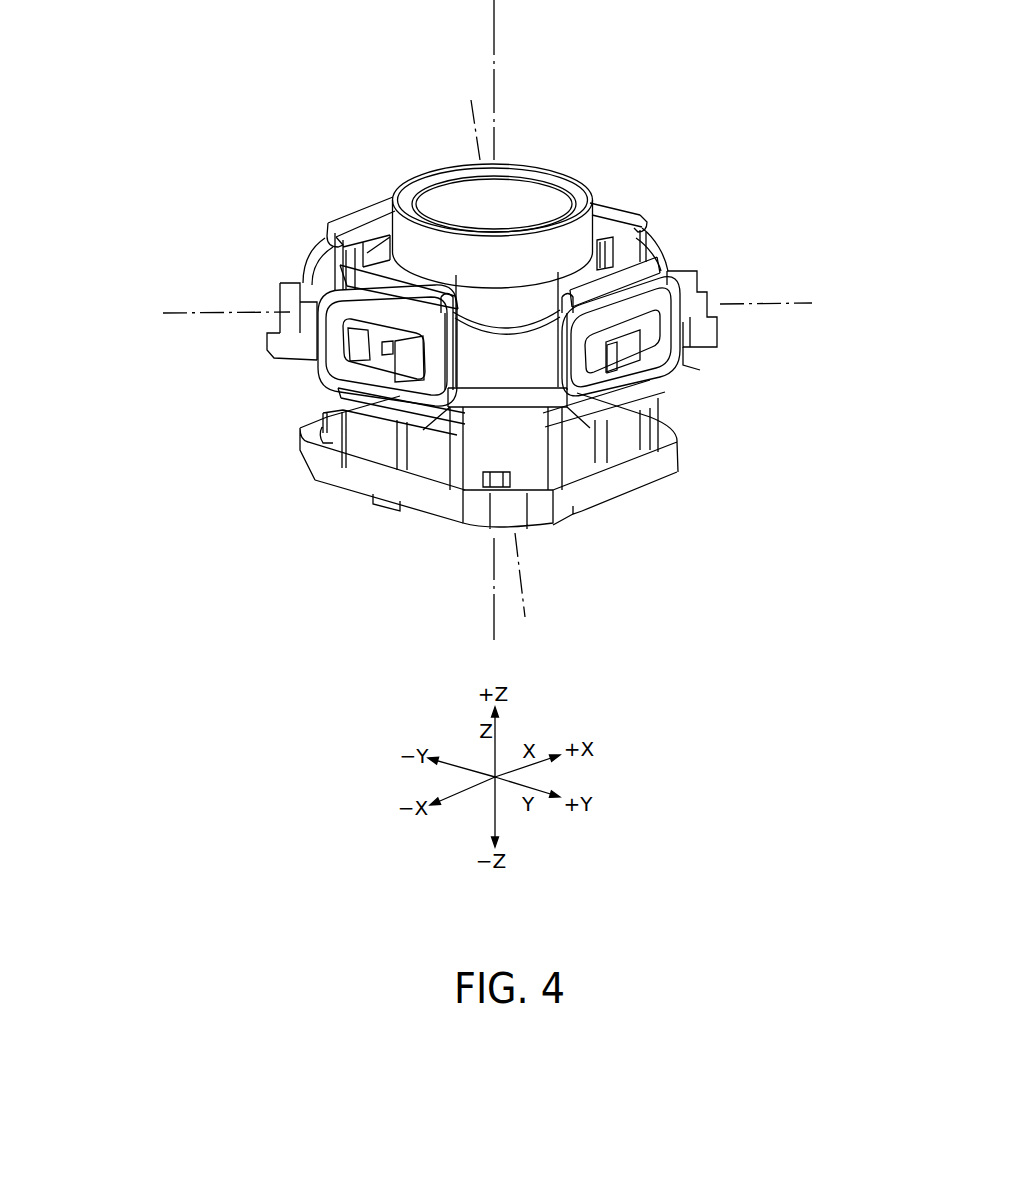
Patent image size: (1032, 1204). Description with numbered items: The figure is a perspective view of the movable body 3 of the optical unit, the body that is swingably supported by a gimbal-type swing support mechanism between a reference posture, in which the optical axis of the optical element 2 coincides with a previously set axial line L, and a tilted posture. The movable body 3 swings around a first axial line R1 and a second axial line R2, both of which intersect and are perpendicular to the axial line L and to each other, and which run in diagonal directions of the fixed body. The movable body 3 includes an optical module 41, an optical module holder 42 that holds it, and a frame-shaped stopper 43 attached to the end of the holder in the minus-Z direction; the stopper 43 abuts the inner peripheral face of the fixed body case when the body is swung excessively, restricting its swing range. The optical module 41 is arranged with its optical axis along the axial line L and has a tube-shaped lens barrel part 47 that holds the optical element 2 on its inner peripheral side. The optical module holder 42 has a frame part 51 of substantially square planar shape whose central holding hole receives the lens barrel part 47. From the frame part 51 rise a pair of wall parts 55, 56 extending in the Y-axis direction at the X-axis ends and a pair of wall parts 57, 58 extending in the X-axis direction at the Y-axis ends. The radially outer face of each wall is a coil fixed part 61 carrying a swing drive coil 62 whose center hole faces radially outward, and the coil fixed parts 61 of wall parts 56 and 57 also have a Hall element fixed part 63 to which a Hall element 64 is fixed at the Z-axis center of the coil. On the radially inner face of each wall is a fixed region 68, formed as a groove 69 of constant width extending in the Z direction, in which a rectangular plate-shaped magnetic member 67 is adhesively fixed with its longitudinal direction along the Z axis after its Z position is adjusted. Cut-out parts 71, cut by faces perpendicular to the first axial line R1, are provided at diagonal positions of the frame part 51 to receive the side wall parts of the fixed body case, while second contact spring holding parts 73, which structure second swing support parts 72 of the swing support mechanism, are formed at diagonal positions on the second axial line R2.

The movable body 3 is at (277, 97).
The axial line L is at (497, 30).
The first axial line R1 is at (522, 597).
The second axial line R2 is at (183, 312).
The optical element 2 is at (512, 187).
The optical module 41 is at (497, 179).
The lens barrel part 47 is at (540, 285).
The optical module holder 42 is at (507, 254).
The stopper 43 is at (690, 481).
The frame part 51 is at (503, 395).
The wall part 55 is at (642, 215).
The wall part 56 is at (283, 314).
The wall part 57 is at (698, 321).
The wall part 58 is at (335, 230).
The coil fixed part 61 is at (495, 370).
The swing drive coil 62 is at (316, 255).
The Hall element fixed part 63 is at (497, 396).
The Hall element 64 is at (362, 330).
The magnetic member 67 is at (388, 258).
The fixed region 68 is at (505, 204).
The groove 69 is at (375, 273).
The cut-out part 71 is at (472, 408).
The second swing support part 72 is at (277, 274).
The second contact spring holding part 73 is at (499, 298).